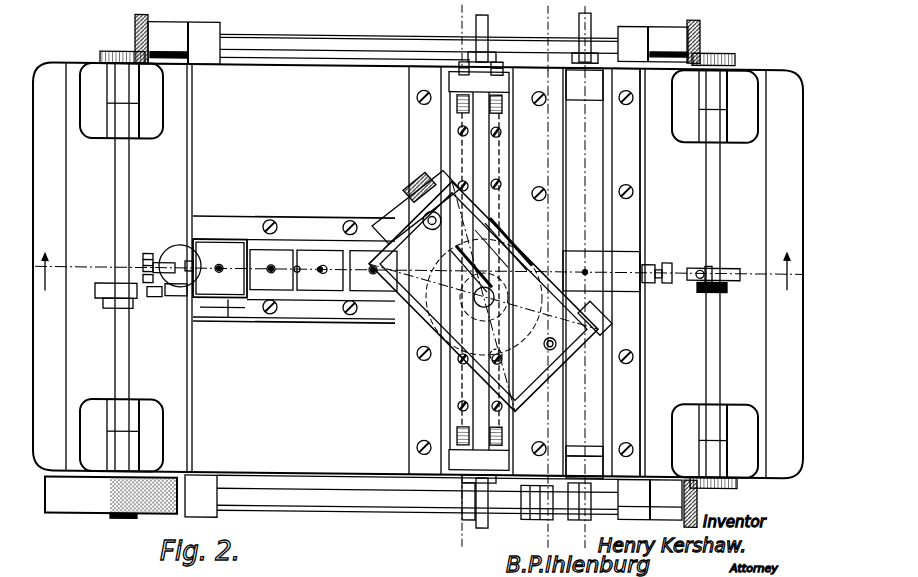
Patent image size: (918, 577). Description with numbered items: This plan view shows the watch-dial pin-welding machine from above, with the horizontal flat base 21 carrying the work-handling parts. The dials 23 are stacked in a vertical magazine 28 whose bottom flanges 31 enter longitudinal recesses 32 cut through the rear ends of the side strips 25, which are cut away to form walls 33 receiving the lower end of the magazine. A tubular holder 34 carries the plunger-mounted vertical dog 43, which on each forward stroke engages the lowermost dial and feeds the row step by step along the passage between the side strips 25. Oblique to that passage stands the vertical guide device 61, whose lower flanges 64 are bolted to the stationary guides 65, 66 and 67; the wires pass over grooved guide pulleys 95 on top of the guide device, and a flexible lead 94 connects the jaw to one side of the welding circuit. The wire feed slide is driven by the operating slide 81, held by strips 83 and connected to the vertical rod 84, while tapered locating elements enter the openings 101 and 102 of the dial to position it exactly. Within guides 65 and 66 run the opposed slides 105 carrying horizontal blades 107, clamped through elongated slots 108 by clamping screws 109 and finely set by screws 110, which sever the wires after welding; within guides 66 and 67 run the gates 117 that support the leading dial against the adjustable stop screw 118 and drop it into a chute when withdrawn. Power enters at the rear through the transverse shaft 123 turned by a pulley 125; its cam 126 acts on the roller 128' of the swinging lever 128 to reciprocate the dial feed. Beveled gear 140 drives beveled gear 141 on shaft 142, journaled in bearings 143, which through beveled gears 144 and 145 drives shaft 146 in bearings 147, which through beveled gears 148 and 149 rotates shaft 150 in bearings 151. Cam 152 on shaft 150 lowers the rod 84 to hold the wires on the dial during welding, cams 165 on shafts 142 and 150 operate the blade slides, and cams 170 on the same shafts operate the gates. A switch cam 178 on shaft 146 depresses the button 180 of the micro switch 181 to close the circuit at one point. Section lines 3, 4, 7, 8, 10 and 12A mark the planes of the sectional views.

The section line 3- 3 is at (415, 278).
The section line 4- 4 is at (462, 6).
The section line 7- 7 is at (548, 6).
The section line 8- 8 is at (585, 6).
The rotary work table 10 is at (382, 224).
The carriage wheel 12A is at (117, 124).
The horizontal flat base 21 is at (205, 374).
The dials 23 is at (275, 259).
The side strips 25 is at (315, 229).
The vertical magazine 28 is at (197, 236).
The outwardly projecting flanges 31 is at (220, 259).
The longitudinal recesses 32 is at (143, 259).
The walls 33 is at (222, 297).
The tubular holder 34 is at (175, 294).
The vertical dog 43 is at (188, 256).
The vertical guide device 61 is at (528, 318).
The flanges 64 is at (392, 356).
The stationary guide 65 is at (430, 111).
The stationary guide 66 is at (540, 169).
The stationary guide 67 is at (622, 171).
The operating slide 81 is at (558, 338).
The strips 83 is at (602, 327).
The vertical rod 84 is at (520, 352).
The flexible lead 94 is at (396, 194).
The grooved guide pulleys 95 is at (522, 281).
The opening of the dial 101 is at (272, 237).
The opening of the dial 102 is at (262, 247).
The opposed slides 105 is at (430, 99).
The horizontal blades 107 is at (497, 158).
The elongated slots 108 is at (458, 125).
The clamping screws 109 is at (460, 138).
The adjusting screws 110 is at (584, 470).
The reciprocatory gates 117 is at (578, 106).
The stop screw 118 is at (664, 272).
The transverse shaft 123 is at (125, 366).
The pulley 125 is at (100, 514).
The cam 126 is at (108, 299).
The vertically swinging lever 128 is at (127, 272).
The roller 128' is at (158, 307).
The beveled gear 140 is at (112, 54).
The beveled gear 141 is at (136, 26).
The shaft 142 is at (290, 18).
The stationary bearings 143 is at (208, 32).
The beveled gear 144 is at (697, 21).
The beveled gear 145 is at (726, 52).
The shaft 146 is at (712, 181).
The bearings 147 is at (732, 133).
The beveled gear 148 is at (732, 473).
The beveled gear 149 is at (692, 508).
The shaft 150 is at (372, 500).
The bearings 151 is at (205, 488).
The cam 152 is at (537, 490).
The cams 165 is at (480, 31).
The cams 170 is at (583, 32).
The switch cam 178 is at (724, 279).
The button 180 is at (720, 256).
The switch 181 is at (714, 263).